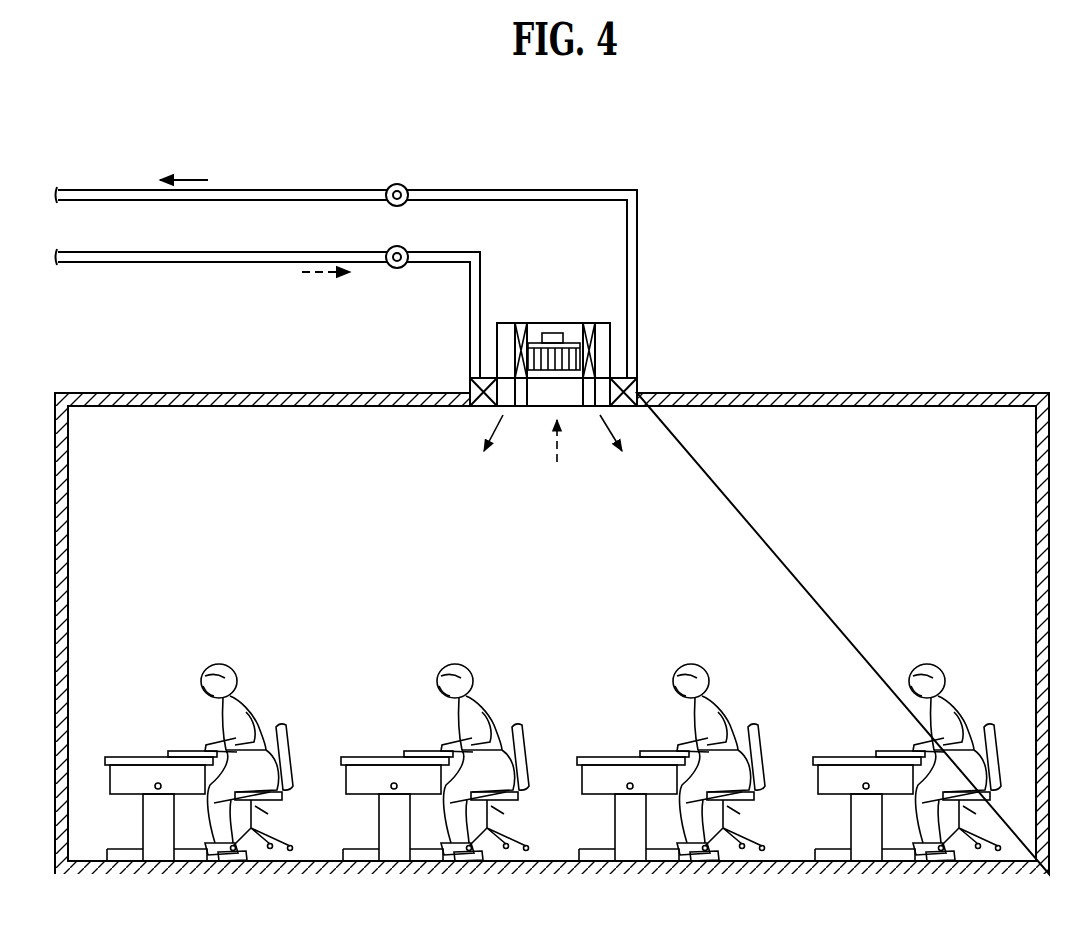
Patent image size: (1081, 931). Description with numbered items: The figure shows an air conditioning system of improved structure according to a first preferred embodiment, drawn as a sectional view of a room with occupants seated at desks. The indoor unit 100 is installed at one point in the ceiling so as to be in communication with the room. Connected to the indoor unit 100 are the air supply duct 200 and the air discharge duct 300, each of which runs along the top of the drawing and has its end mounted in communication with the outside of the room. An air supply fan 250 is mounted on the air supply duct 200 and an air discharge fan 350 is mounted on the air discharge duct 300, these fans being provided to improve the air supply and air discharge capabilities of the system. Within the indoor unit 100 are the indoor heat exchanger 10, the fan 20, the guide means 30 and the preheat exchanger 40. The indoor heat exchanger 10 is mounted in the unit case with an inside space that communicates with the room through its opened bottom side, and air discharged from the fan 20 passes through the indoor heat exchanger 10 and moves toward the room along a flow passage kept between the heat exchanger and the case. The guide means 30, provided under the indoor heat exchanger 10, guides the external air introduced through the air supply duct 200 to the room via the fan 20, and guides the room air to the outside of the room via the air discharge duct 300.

The indoor heat exchanger 10 is at (579, 356).
The fan 20 is at (585, 341).
The guide means 30 is at (540, 410).
The preheat exchanger 40 is at (466, 377).
The indoor unit 100 is at (562, 315).
The air supply duct 200 is at (478, 278).
The air supply fan 250 is at (397, 268).
The air discharge duct 300 is at (557, 190).
The air discharge fan 350 is at (397, 182).